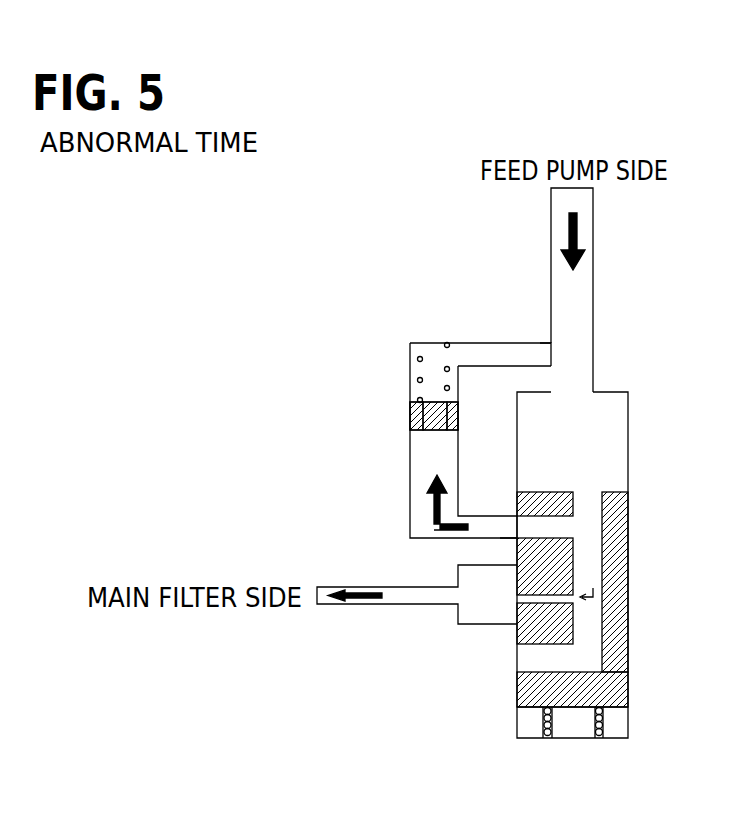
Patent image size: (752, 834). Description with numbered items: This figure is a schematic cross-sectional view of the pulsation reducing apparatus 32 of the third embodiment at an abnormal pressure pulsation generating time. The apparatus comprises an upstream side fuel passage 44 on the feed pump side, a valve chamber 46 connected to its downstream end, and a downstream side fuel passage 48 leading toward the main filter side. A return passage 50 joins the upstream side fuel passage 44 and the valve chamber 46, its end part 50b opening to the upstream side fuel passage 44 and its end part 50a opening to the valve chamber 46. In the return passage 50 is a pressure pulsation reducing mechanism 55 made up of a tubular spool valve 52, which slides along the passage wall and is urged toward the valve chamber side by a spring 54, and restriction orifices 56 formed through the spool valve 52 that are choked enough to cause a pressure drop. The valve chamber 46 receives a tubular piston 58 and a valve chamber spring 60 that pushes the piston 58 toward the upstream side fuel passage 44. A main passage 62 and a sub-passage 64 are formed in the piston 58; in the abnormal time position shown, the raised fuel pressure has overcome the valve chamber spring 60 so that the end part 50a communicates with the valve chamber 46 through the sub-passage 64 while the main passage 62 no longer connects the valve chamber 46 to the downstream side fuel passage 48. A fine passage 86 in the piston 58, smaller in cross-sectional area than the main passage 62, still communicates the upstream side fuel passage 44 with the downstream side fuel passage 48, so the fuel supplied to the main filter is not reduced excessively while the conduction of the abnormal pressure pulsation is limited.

The pulsation reducing apparatus 32 is at (400, 262).
The upstream side fuel passage 44 is at (597, 241).
The valve chamber 46 is at (630, 411).
The downstream side fuel passage 48 is at (421, 608).
The return passage 50 is at (408, 472).
The valve chamber side end part of the return passage 50a is at (517, 536).
The upstream side fuel passage side end part of the return passage 50b is at (548, 343).
The spool valve 52 is at (432, 430).
The spring 54 is at (416, 380).
The pressure pulsation reducing mechanism 55 is at (342, 372).
The restriction orifices 56 is at (412, 415).
The piston 58 is at (620, 548).
The valve chamber spring 60 is at (605, 734).
The main passage 62 is at (570, 672).
The sub-passage 64 is at (541, 516).
The fine passage 86 is at (538, 605).